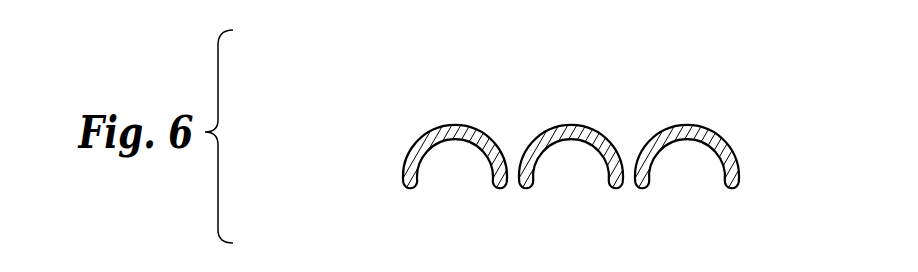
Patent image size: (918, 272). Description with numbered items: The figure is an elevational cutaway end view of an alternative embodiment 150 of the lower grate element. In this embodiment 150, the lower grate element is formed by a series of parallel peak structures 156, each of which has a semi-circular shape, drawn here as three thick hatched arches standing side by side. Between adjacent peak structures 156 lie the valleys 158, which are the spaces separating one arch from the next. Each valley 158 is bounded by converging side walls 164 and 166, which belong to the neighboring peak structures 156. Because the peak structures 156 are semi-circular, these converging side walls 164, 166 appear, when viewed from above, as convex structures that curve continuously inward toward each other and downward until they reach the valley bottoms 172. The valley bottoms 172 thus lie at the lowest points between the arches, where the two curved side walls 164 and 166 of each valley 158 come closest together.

The alternative embodiment of the lower grate element 150 is at (537, 153).
The parallel peak structures 156 is at (458, 127).
The valleys 158 is at (510, 152).
The converging side wall 164 is at (533, 162).
The converging side wall 166 is at (490, 167).
The valley bottoms 172 is at (512, 178).